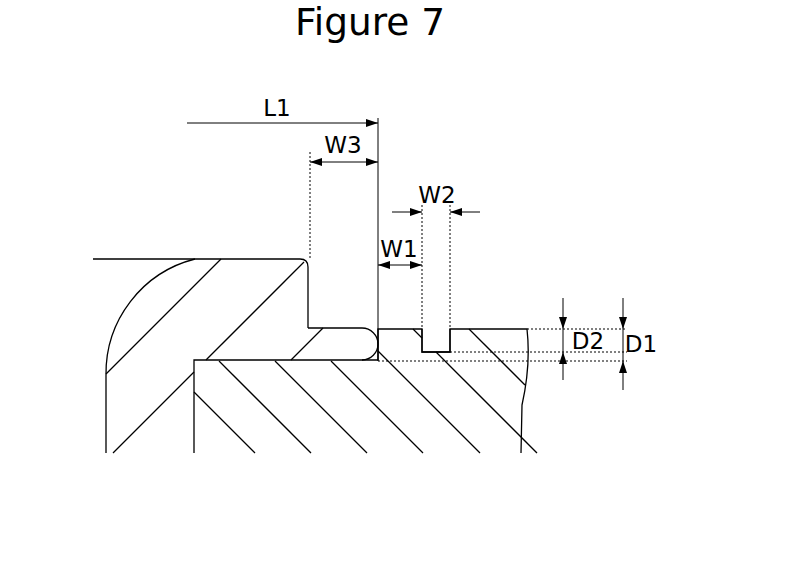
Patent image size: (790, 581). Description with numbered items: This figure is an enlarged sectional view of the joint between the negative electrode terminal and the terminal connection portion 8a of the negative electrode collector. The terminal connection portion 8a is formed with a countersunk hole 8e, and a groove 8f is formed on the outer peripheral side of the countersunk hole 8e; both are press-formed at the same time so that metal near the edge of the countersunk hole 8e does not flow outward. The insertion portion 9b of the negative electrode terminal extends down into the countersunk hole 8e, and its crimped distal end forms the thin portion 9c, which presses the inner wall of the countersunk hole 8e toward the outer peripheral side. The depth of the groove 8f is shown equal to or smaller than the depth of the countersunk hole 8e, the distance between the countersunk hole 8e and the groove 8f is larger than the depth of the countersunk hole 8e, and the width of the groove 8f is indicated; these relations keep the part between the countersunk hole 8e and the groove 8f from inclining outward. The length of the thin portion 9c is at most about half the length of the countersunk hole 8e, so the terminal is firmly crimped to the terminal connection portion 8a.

The insertion portion 9b is at (253, 293).
The thin portion 9c is at (343, 340).
The terminal connection portion 8a is at (245, 425).
The countersunk hole 8e is at (378, 332).
The groove 8f is at (447, 329).